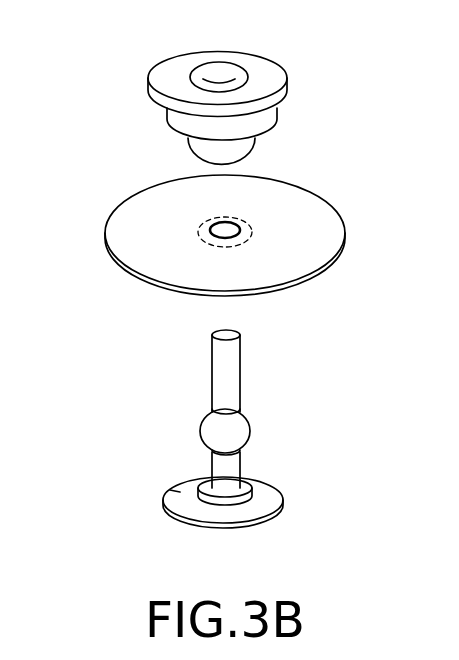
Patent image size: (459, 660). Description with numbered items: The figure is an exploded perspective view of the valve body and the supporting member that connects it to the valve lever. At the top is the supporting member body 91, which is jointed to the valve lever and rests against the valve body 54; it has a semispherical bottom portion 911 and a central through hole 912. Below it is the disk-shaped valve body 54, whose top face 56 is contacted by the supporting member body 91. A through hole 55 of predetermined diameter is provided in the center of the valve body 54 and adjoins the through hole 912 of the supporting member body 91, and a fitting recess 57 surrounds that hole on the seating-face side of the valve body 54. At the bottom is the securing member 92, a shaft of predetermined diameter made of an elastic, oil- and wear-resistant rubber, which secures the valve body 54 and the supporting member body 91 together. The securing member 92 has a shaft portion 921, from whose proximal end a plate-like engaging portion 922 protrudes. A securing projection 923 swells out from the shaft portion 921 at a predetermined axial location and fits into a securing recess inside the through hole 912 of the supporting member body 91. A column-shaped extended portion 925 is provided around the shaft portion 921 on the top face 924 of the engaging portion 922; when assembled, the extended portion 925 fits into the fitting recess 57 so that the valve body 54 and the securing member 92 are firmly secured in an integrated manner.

The supporting member body 91 is at (195, 98).
The through hole 912 is at (223, 73).
The semispherical bottom portion 911 is at (248, 152).
The valve body 54 is at (220, 240).
The top face 56 is at (307, 229).
The through hole 55 is at (210, 230).
The fitting recess 57 is at (247, 238).
The securing member 92 is at (234, 445).
The shaft portion 921 is at (225, 380).
The securing projection 923 is at (237, 432).
The extended portion 925 is at (250, 477).
The engaging portion 922 is at (268, 500).
The top face 924 is at (183, 490).